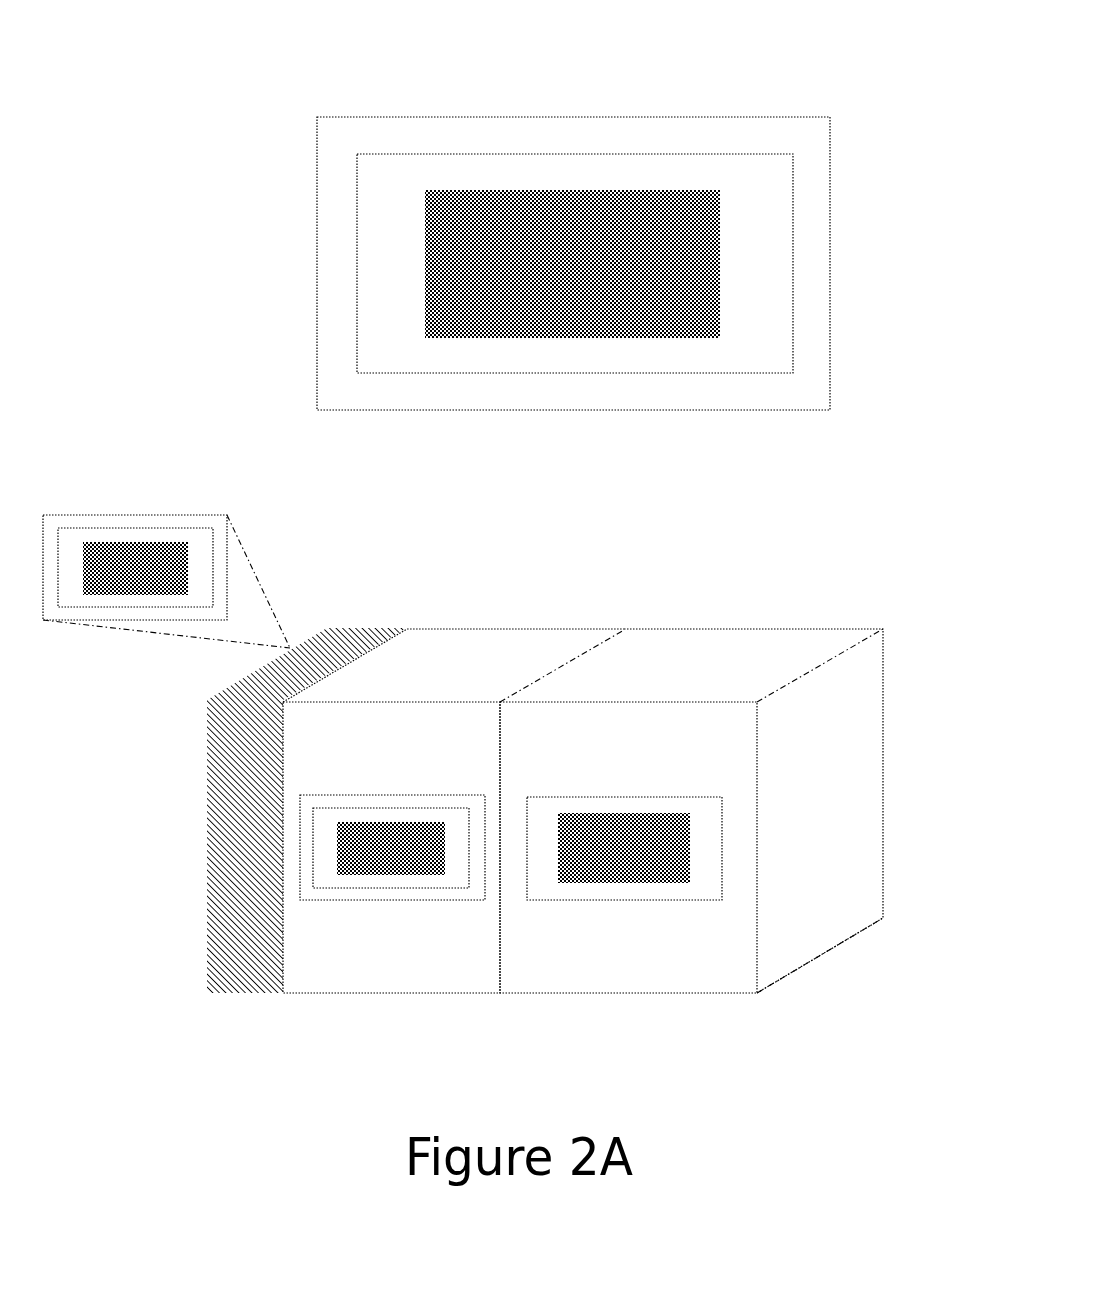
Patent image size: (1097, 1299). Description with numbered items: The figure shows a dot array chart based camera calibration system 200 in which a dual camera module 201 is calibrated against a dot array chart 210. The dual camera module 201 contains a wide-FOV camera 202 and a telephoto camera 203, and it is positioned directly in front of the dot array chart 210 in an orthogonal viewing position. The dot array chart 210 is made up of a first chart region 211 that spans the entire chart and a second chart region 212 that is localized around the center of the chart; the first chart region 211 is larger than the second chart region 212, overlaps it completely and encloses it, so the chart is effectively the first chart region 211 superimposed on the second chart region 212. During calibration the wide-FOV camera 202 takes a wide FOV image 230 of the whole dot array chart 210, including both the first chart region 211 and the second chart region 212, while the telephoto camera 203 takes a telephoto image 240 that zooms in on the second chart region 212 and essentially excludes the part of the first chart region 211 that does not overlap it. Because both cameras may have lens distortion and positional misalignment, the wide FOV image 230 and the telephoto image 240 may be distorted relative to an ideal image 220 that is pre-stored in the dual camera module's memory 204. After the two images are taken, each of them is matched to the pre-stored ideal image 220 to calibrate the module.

The dot array chart based camera calibration system 200 is at (244, 188).
The dual camera module 201 is at (583, 738).
The wide-FOV camera 202 is at (537, 628).
The telephoto camera 203 is at (647, 628).
The memory 204 is at (207, 847).
The dot array chart 210 is at (641, 117).
The first chart region 211 is at (793, 207).
The second chart region 212 is at (720, 313).
The ideal image 220 is at (142, 515).
The wide FOV image 230 is at (415, 900).
The telephoto image 240 is at (628, 897).